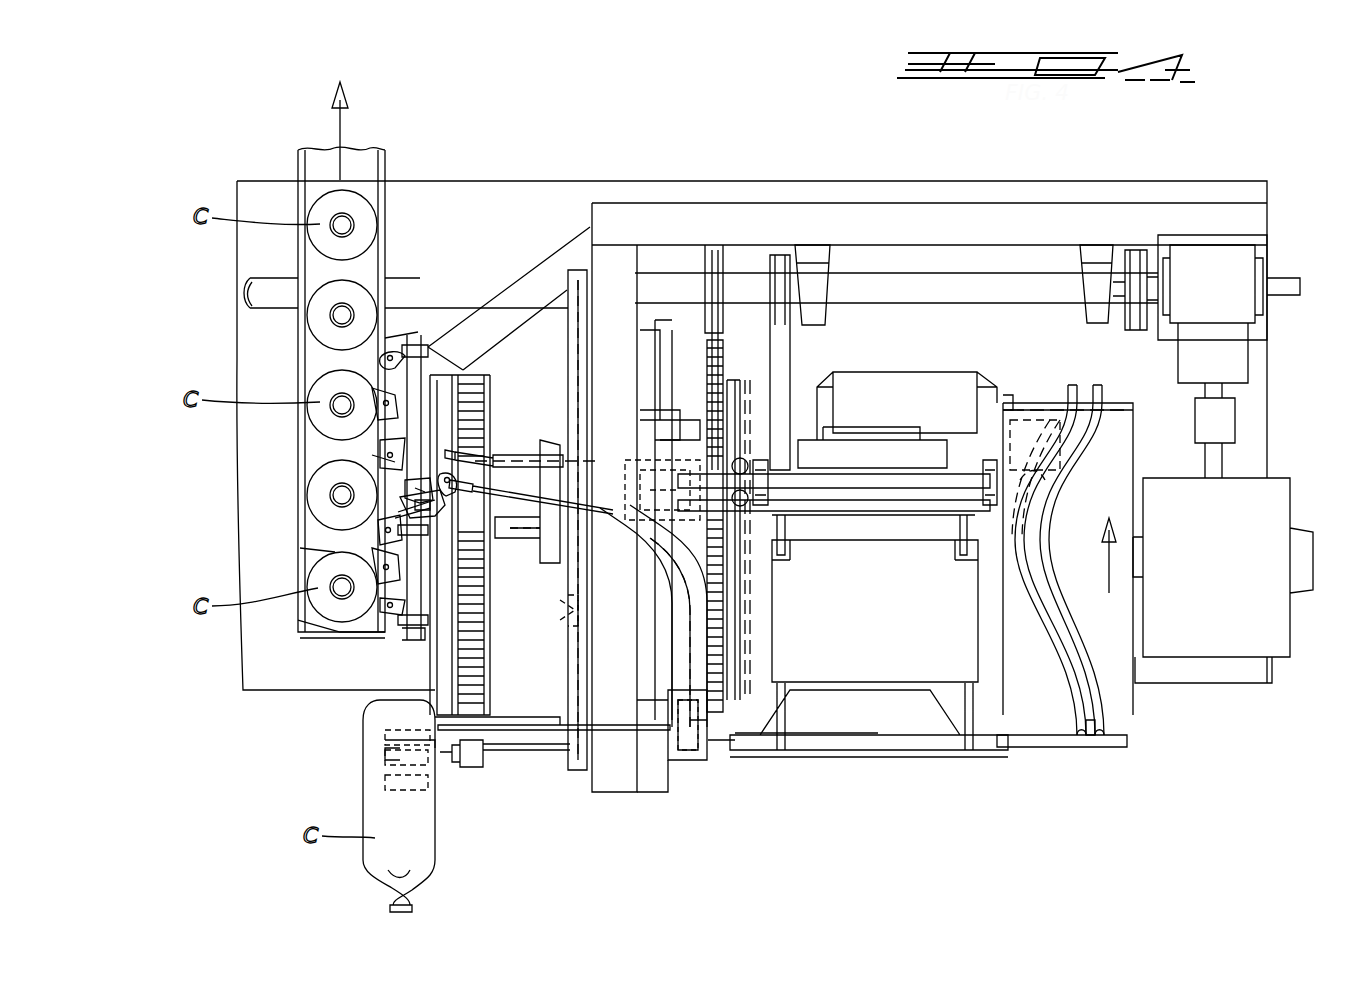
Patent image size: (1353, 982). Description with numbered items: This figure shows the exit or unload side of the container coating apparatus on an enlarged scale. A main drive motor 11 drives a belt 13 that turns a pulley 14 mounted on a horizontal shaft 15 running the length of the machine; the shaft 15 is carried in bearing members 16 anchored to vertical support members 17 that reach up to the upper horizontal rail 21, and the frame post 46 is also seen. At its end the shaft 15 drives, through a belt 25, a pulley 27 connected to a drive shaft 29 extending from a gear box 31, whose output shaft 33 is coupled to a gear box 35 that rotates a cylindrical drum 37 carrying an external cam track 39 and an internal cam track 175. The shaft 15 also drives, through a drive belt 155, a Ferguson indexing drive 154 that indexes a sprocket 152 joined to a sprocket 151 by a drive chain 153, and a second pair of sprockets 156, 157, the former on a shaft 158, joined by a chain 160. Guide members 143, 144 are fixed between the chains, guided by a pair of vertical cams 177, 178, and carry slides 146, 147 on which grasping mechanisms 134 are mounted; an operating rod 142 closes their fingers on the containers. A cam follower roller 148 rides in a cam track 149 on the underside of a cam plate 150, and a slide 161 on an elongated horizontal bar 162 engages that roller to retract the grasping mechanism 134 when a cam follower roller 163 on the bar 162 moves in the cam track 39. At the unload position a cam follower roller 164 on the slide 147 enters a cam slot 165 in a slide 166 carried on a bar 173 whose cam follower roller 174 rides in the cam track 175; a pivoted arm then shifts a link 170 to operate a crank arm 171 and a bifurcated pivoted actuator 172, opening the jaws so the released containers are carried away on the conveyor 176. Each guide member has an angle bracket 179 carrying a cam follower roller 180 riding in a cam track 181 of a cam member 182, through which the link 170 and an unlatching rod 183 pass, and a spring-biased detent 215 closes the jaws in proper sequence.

The main drive motor 11 is at (900, 404).
The belt 13 is at (715, 245).
The pulley 14 is at (707, 250).
The horizontal shaft 15 is at (925, 288).
The bearing members 16 is at (815, 315).
The vertical support members 17 is at (810, 245).
The upper horizontal rail 21 is at (988, 215).
The belt 25 is at (1135, 255).
The pulley 27 is at (1125, 327).
The drive shaft 29 is at (1150, 290).
The gear box 31 is at (1226, 296).
The output shaft 33 is at (1228, 432).
The gear box 35 is at (1226, 576).
The cylindrical drum 37 is at (1120, 695).
The cam track 39 is at (1090, 712).
The frame post 46 is at (628, 304).
The grasping mechanism 134 is at (315, 550).
The operating rod 142 is at (500, 455).
The guide member 143 is at (650, 720).
The guide member 144 is at (510, 540).
The slide 146 is at (525, 745).
The slide 147 is at (475, 527).
The cam follower roller 148 is at (700, 762).
The cam track 149 is at (740, 646).
The cam plate 150 is at (735, 660).
The sprocket 151 is at (727, 393).
The sprocket 152 is at (725, 674).
The drive chain 153 is at (715, 602).
The Ferguson indexing drive 154 is at (925, 626).
The drive belt 155 is at (785, 362).
The sprocket 156 is at (488, 382).
The sprocket 157 is at (470, 676).
The shaft 158 is at (655, 422).
The chain 160 is at (480, 655).
The slide 161 is at (725, 748).
The elongated horizontal bar 162 is at (890, 740).
The cam follower roller 163 is at (1088, 737).
The cam follower roller 164 is at (640, 432).
The cam slot 165 is at (633, 470).
The slide 166 is at (690, 555).
The link 170 is at (520, 503).
The crank arm 171 is at (400, 497).
The bifurcated pivoted actuator 172 is at (392, 535).
The bar 173 is at (892, 452).
The cam follower roller 174 is at (1005, 410).
The cam track 175 is at (1040, 430).
The conveyor 176 is at (305, 160).
The vertical cam 177 is at (440, 679).
The vertical cam 178 is at (748, 622).
The angle bracket 179 is at (560, 612).
The cam follower roller 180 is at (578, 612).
The cam track 181 is at (585, 645).
The cam member 182 is at (580, 690).
The unlatching rod 183 is at (500, 462).
The spring-biased detent 215 is at (410, 455).